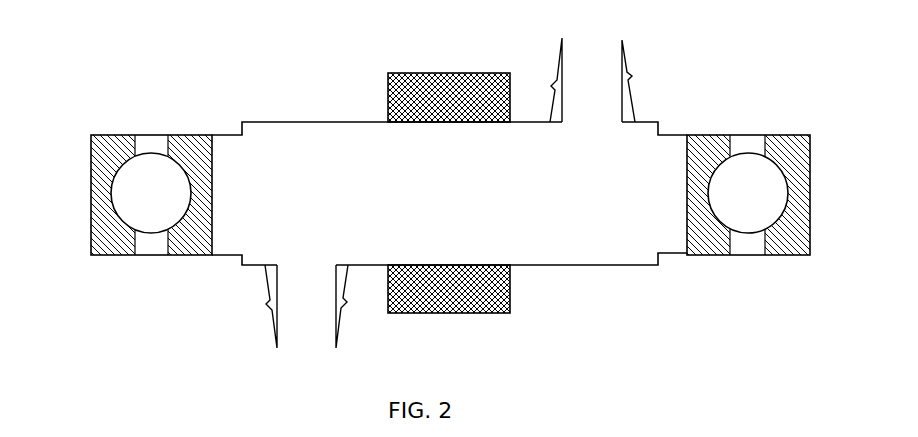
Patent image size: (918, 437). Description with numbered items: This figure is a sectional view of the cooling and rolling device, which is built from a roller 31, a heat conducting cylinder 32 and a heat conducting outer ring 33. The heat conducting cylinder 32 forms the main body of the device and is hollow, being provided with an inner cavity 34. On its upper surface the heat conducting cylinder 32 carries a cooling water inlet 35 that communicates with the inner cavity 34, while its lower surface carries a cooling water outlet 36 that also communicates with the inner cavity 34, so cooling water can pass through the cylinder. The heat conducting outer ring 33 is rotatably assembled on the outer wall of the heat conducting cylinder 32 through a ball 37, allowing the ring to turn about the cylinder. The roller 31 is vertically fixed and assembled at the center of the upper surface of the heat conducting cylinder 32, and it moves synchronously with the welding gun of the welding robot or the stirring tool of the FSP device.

The roller 31 is at (452, 73).
The heat conducting cylinder 32 is at (340, 122).
The heat conducting outer ring 33 is at (133, 194).
The inner cavity 34 is at (542, 239).
The cooling water inlet 35 is at (633, 73).
The cooling water outlet 36 is at (268, 317).
The ball 37 is at (153, 152).